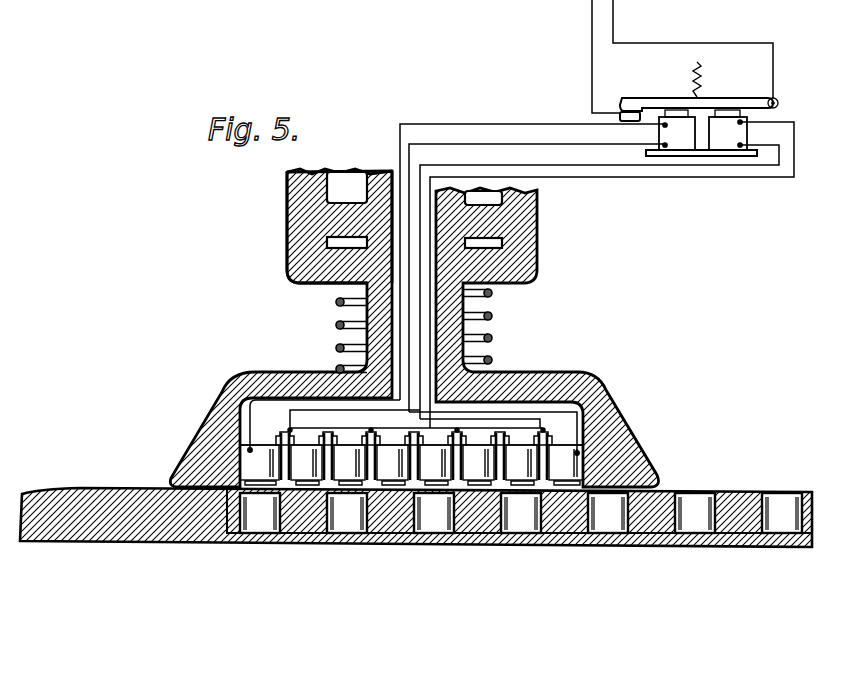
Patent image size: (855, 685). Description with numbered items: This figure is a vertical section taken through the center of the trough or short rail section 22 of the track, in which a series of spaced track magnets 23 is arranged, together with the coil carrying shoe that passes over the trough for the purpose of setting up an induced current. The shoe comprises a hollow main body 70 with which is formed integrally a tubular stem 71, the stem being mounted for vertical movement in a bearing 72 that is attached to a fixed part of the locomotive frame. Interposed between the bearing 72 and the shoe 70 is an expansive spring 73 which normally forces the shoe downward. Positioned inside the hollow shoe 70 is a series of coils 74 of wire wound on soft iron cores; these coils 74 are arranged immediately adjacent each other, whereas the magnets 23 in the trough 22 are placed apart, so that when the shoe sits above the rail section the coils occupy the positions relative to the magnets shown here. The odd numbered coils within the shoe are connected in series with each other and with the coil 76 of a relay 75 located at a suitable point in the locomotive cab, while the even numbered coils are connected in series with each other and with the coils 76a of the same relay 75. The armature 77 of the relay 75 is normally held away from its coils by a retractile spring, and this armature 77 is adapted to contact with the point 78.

The trough or short rail section 22 is at (85, 490).
The magnets 23 is at (258, 522).
The main body 70 is at (207, 424).
The tubular stem 71 is at (370, 312).
The bearing 72 is at (302, 204).
The expansive spring 73 is at (492, 315).
The coils 74 is at (411, 456).
The relay 75 is at (703, 157).
The coil 76 is at (678, 150).
The coils 76a is at (736, 152).
The armature 77 is at (654, 100).
The point 78 is at (620, 118).